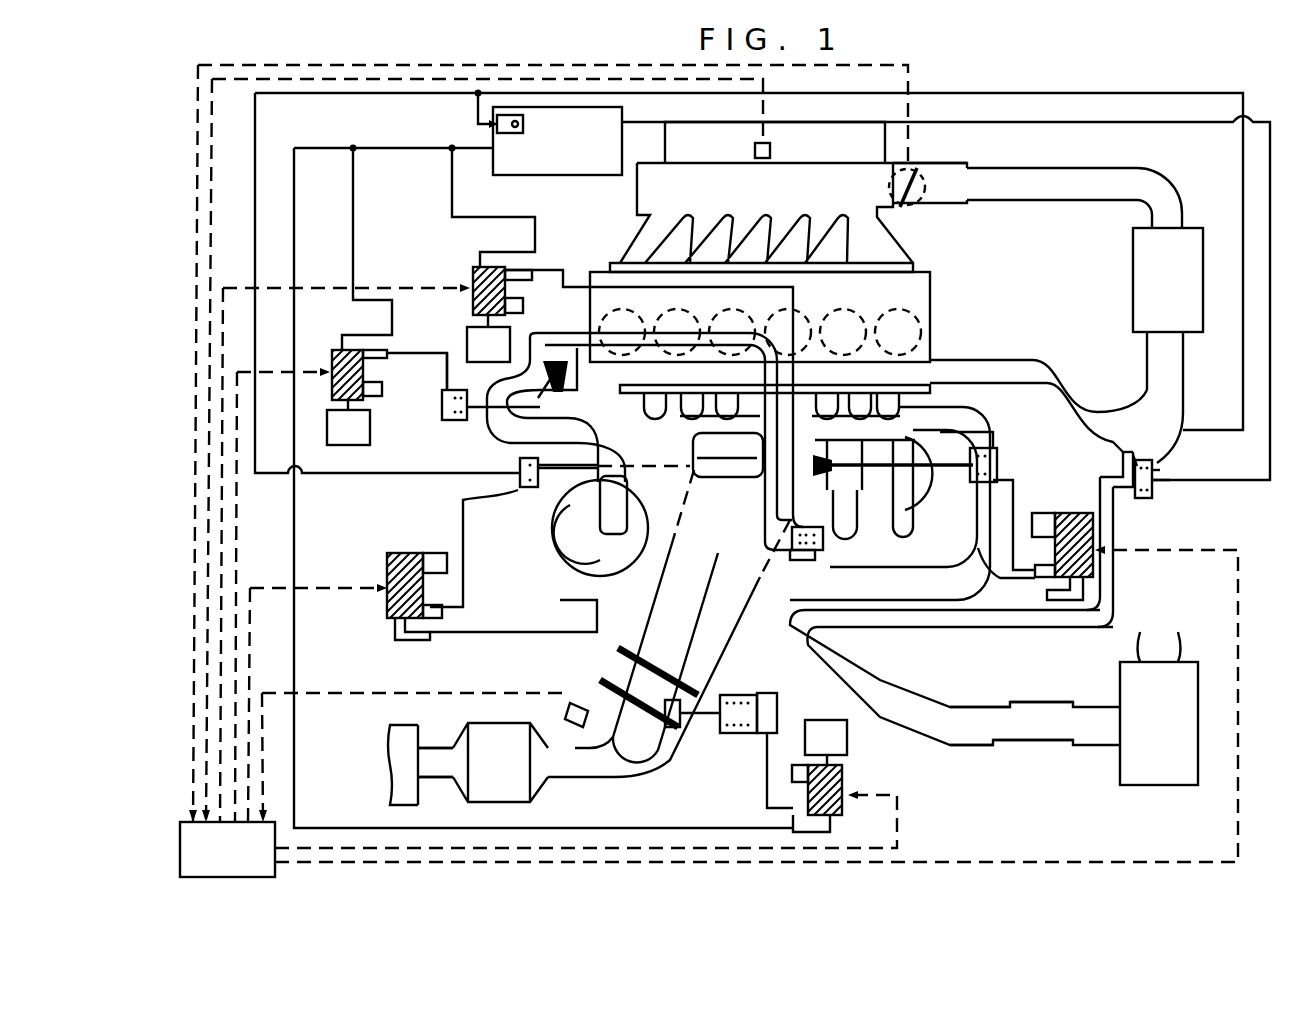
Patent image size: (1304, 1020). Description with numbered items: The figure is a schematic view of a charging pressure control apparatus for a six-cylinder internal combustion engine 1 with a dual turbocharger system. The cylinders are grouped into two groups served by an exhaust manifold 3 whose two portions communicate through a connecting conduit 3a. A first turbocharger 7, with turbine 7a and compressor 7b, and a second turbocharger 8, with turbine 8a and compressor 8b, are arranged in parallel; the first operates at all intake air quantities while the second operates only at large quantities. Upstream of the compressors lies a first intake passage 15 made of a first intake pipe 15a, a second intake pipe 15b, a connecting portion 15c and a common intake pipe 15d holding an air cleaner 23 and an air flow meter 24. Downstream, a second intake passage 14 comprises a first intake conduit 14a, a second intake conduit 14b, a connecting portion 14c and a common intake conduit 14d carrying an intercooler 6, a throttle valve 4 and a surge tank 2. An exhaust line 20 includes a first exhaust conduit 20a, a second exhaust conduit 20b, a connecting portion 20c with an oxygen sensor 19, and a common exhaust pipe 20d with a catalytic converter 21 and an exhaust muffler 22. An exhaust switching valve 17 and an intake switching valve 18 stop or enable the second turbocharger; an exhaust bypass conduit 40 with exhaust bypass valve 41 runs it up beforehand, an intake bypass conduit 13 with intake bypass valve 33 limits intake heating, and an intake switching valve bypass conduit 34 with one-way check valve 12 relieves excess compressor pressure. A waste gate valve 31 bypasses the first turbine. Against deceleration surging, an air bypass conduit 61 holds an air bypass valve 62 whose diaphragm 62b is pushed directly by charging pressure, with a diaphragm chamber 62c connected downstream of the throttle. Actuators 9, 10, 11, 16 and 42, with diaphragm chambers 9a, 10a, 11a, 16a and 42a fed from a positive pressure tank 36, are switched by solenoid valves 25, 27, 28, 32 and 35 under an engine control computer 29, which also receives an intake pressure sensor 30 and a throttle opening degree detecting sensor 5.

The internal combustion engine 1 is at (936, 286).
The surge tank 2 is at (704, 171).
The exhaust manifold 3 is at (735, 374).
The connecting conduit 3a is at (797, 393).
The throttle valve 4 is at (908, 197).
The throttle opening degree detecting sensor 5 is at (930, 175).
The intercooler 6 is at (1192, 238).
The first turbocharger 7 is at (877, 500).
The turbine 7a is at (827, 533).
The compressor 7b is at (918, 522).
The second turbocharger 8 is at (643, 503).
The turbine 8a is at (614, 510).
The compressor 8b is at (552, 537).
The actuator 9 is at (985, 481).
The diaphragm chamber 9a is at (997, 463).
The actuator 10 is at (862, 566).
The diaphragm chamber 10a is at (797, 551).
The actuator 11 is at (444, 392).
The diaphragm chamber 11a is at (442, 407).
The one-way check valve 12 is at (556, 404).
The intake bypass conduit 13 is at (577, 317).
The second intake passage 14 is at (1147, 365).
The first intake conduit 14a is at (1075, 433).
The second intake conduit 14b is at (1078, 380).
The connecting portion 14c is at (1183, 378).
The common intake conduit 14d is at (1050, 182).
The first intake passage 15 is at (900, 683).
The first intake pipe 15a is at (1004, 573).
The second intake pipe 15b is at (558, 580).
The connecting portion 15c is at (755, 706).
The common intake pipe 15d is at (968, 737).
The actuator 16 is at (735, 733).
The diaphragm chamber 16a is at (765, 717).
The exhaust switching valve 17 is at (677, 733).
The intake switching valve 18 is at (462, 352).
The oxygen sensor 19 is at (568, 708).
The exhaust line 20 is at (660, 757).
The first exhaust conduit 20a is at (617, 683).
The second exhaust conduit 20b is at (620, 648).
The connecting portion 20c is at (607, 755).
The common exhaust pipe 20d is at (433, 763).
The catalytic converter 21 is at (510, 803).
The exhaust muffler 22 is at (400, 753).
The air cleaner 23 is at (1162, 785).
The air flow meter 24 is at (1047, 742).
The solenoid valve 25 is at (336, 350).
The solenoid valve 27 is at (470, 280).
The solenoid valve 28 is at (847, 773).
The engine control computer 29 is at (190, 822).
The intake pressure sensor 30 is at (770, 150).
The waste gate valve 31 is at (828, 453).
The duty control solenoid valve 32 is at (407, 552).
The intake bypass valve 33 is at (817, 554).
The intake switching valve bypass conduit 34 is at (550, 358).
The duty control solenoid valve 35 is at (1070, 512).
The positive pressure tank 36 is at (522, 176).
The exhaust bypass conduit 40 is at (712, 473).
The exhaust bypass valve 41 is at (713, 456).
The actuator 42 is at (518, 490).
The diaphragm chamber 42a is at (516, 458).
The air bypass conduit 61 is at (1113, 582).
The air bypass valve 62 is at (1137, 503).
The diaphragm 62b is at (1152, 482).
The diaphragm chamber 62c is at (1152, 472).